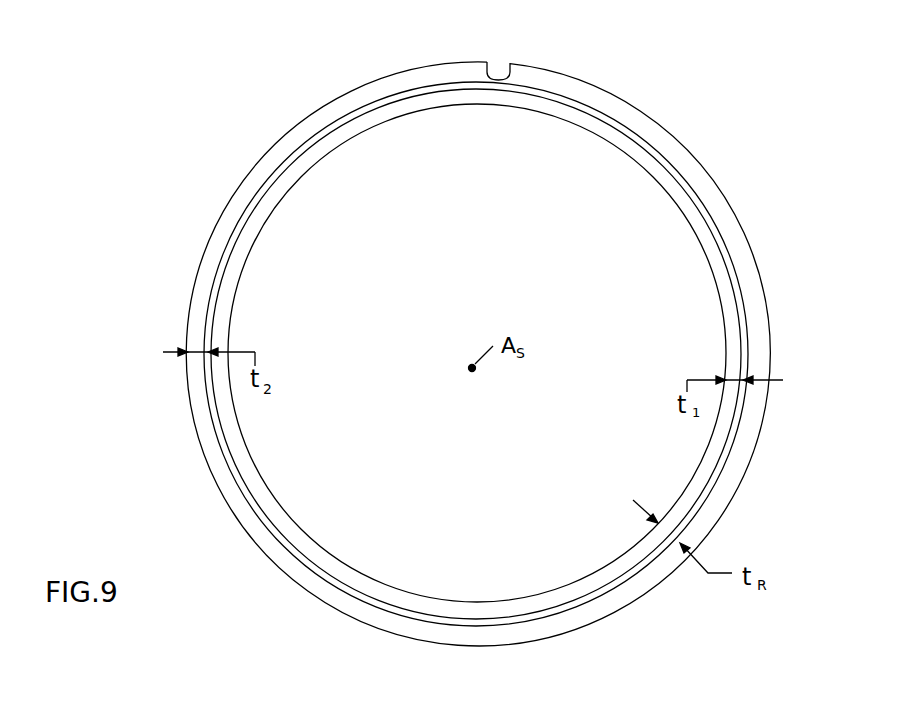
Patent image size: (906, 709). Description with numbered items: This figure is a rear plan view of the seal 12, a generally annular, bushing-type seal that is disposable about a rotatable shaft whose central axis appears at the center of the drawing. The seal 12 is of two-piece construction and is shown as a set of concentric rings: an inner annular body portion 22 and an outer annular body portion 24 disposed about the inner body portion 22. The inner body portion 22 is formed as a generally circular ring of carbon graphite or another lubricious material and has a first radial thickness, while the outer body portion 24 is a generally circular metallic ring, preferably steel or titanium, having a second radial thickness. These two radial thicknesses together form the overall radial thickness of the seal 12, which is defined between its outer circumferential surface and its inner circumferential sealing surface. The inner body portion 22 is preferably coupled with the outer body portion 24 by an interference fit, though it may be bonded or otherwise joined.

The seal 12 is at (158, 127).
The inner annular body portion 22 is at (303, 183).
The outer annular body portion 24 is at (662, 113).